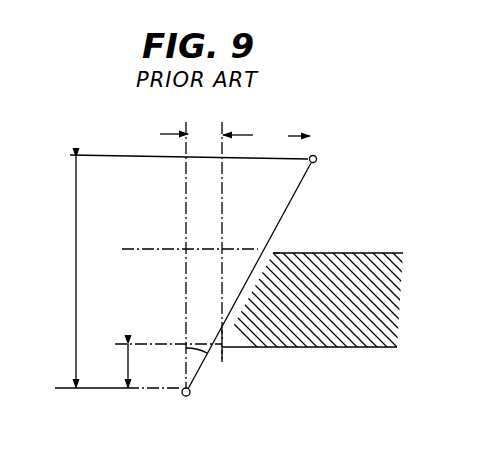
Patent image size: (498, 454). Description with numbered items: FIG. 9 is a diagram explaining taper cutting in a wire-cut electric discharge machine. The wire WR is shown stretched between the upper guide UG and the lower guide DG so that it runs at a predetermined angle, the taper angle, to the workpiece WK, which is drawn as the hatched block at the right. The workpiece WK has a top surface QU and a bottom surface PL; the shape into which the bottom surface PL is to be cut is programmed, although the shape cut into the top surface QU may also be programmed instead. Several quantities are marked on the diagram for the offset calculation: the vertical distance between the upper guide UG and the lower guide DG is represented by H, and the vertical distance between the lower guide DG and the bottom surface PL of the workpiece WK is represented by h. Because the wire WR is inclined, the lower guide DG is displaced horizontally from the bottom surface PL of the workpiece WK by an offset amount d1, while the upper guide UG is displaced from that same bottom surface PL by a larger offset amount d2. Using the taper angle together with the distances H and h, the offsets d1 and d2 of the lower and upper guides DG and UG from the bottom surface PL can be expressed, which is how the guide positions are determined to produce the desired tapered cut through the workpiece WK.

The upper guide UG is at (318, 155).
The lower guide DG is at (188, 396).
The wire WR is at (301, 187).
The workpiece WK is at (369, 349).
The top surface QU is at (275, 252).
The bottom surface PL is at (222, 350).
The distance between the upper and lower guides H is at (75, 272).
The distance between the lower guide and the bottom surface of the workpiece h is at (135, 366).
The amount of offset of the lower guide d1 is at (206, 136).
The amount of offset of the upper guide d2 is at (287, 138).